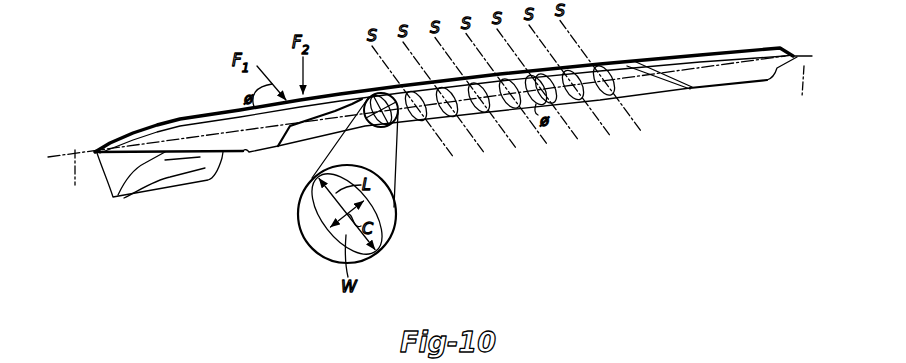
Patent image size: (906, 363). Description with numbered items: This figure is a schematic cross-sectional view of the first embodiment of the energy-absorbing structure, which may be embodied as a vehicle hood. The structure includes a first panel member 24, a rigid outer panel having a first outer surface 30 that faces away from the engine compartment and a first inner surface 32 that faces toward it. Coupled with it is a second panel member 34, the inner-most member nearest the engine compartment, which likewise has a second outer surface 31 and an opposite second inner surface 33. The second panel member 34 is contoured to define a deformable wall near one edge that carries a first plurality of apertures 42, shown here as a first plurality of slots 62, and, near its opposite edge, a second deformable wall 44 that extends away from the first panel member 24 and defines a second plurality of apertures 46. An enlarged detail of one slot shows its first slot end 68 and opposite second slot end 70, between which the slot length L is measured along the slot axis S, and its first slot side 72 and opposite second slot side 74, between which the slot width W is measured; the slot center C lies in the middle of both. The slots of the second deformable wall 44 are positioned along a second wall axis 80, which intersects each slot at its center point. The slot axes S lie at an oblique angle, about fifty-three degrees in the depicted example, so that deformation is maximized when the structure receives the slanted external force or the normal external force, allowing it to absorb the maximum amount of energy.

The first panel member 24 is at (137, 131).
The first outer surface 30 is at (160, 122).
The second outer surface 31 is at (200, 147).
The first inner surface 32 is at (152, 142).
The second inner surface 33 is at (247, 157).
The second panel member 34 is at (788, 68).
The first plurality of apertures 42 is at (510, 117).
The first plurality of slots 62 is at (484, 117).
The second deformable wall 44 is at (308, 127).
The second plurality of apertures 46 is at (504, 75).
The first slot end 68 is at (313, 176).
The second slot end 70 is at (375, 252).
The first slot side 72 is at (327, 226).
The second slot side 74 is at (395, 211).
The second wall axis 80 is at (438, 137).